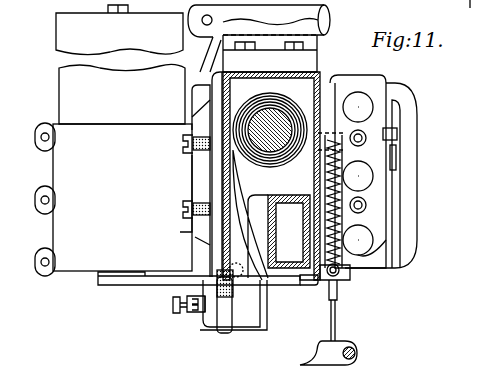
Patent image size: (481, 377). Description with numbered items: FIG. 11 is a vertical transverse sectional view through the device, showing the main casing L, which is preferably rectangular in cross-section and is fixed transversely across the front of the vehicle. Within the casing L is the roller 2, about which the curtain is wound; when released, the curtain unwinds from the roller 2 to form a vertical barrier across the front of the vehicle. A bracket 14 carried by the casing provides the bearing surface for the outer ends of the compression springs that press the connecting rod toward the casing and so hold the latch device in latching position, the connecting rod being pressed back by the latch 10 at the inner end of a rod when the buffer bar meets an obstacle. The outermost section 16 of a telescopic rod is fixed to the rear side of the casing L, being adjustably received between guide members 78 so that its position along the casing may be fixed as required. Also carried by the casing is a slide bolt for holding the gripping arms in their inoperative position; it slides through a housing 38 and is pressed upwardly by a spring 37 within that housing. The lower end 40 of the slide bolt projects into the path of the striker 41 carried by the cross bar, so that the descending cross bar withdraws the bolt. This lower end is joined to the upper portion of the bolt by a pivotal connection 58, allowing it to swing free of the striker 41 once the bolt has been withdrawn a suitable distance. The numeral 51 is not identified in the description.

The outermost section 16 is at (75, 97).
The latch 10 is at (205, 58).
The guide member 78 is at (198, 97).
The main casing L is at (320, 76).
The roller 2 is at (268, 142).
The bracket 14 is at (450, 142).
The housing 38 is at (343, 282).
The spring 37 is at (352, 272).
The pivotal connection 58 is at (328, 282).
The striker 41 is at (305, 276).
The lower end of slide bolt 40 is at (318, 356).
The support 51 is at (467, 14).